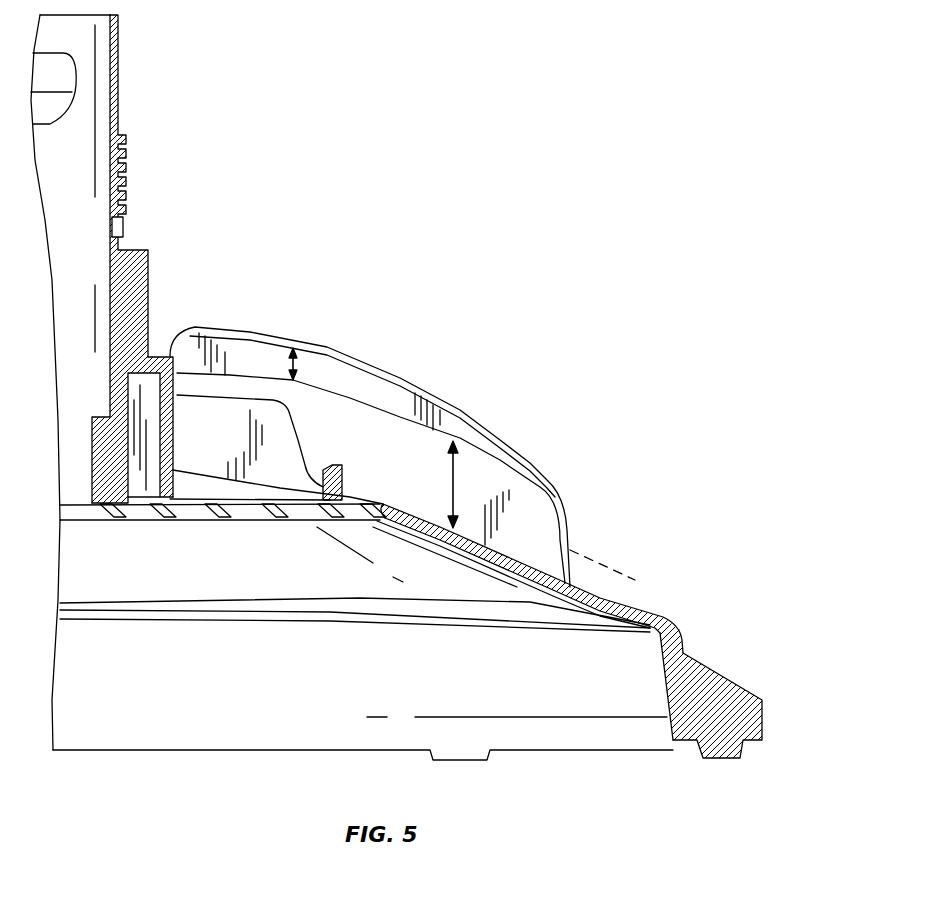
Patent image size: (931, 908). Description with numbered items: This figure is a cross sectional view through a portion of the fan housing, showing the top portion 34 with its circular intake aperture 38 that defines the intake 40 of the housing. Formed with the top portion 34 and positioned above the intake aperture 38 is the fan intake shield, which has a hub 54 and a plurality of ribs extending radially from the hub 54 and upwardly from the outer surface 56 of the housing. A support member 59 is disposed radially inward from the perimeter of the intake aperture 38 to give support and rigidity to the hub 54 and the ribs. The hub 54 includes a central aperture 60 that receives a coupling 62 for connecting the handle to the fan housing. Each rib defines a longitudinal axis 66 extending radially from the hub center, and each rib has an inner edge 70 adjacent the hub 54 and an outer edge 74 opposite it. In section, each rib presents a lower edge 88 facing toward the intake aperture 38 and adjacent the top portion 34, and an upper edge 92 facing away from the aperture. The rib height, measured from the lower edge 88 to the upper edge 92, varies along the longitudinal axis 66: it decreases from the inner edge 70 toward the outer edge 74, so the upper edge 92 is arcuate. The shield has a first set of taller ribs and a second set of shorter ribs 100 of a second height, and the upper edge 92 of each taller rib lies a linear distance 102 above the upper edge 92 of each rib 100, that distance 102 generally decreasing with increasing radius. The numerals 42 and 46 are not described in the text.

The top portion 34 is at (765, 700).
The intake aperture 38 is at (375, 497).
The intake 40 is at (350, 397).
The clearance distance 42 is at (456, 492).
The upper surface of arm 46 is at (447, 405).
The hub 54 is at (155, 360).
The outer surface 56 is at (484, 546).
The support member 59 is at (336, 465).
The central aperture 60 is at (90, 495).
The coupling 62 is at (126, 165).
The longitudinal axis 66 is at (624, 545).
The inner edge 70 is at (175, 433).
The outer edge 74 is at (565, 533).
The lower edge 88 is at (258, 483).
The upper edge 92 is at (228, 370).
The ribs 100 is at (355, 490).
The linear distance 102 is at (291, 363).